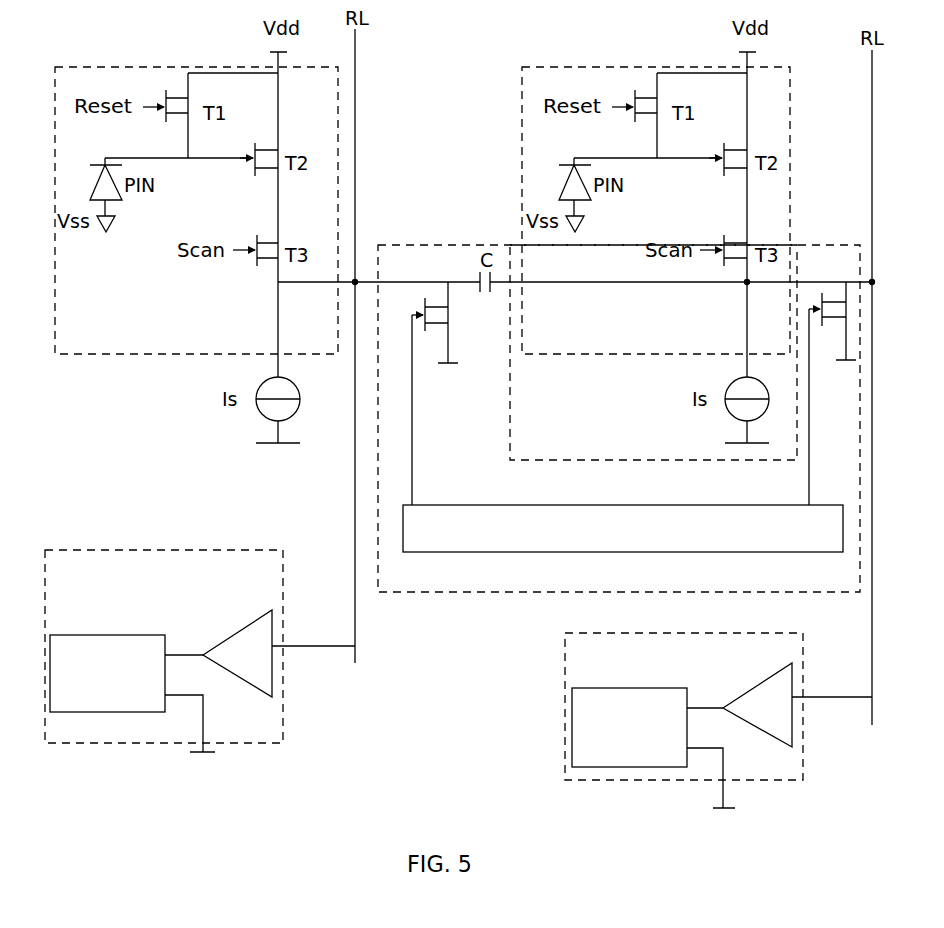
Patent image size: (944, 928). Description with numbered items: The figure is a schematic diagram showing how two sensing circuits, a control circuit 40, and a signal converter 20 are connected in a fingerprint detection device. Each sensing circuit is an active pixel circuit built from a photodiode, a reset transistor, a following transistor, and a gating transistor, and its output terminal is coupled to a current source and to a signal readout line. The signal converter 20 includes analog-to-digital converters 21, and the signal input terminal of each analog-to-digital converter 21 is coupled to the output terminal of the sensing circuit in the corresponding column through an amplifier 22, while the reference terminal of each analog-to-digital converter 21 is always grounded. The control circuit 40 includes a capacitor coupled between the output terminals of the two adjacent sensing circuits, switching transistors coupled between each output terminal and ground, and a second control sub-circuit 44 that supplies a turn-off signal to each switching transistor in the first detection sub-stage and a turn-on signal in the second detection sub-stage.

The signal converter 20 is at (458, 660).
The analog-to-digital converter 21 is at (118, 635).
The amplifier 22 is at (262, 688).
The control circuit 40 is at (619, 439).
The second control sub-circuit 44 is at (495, 505).